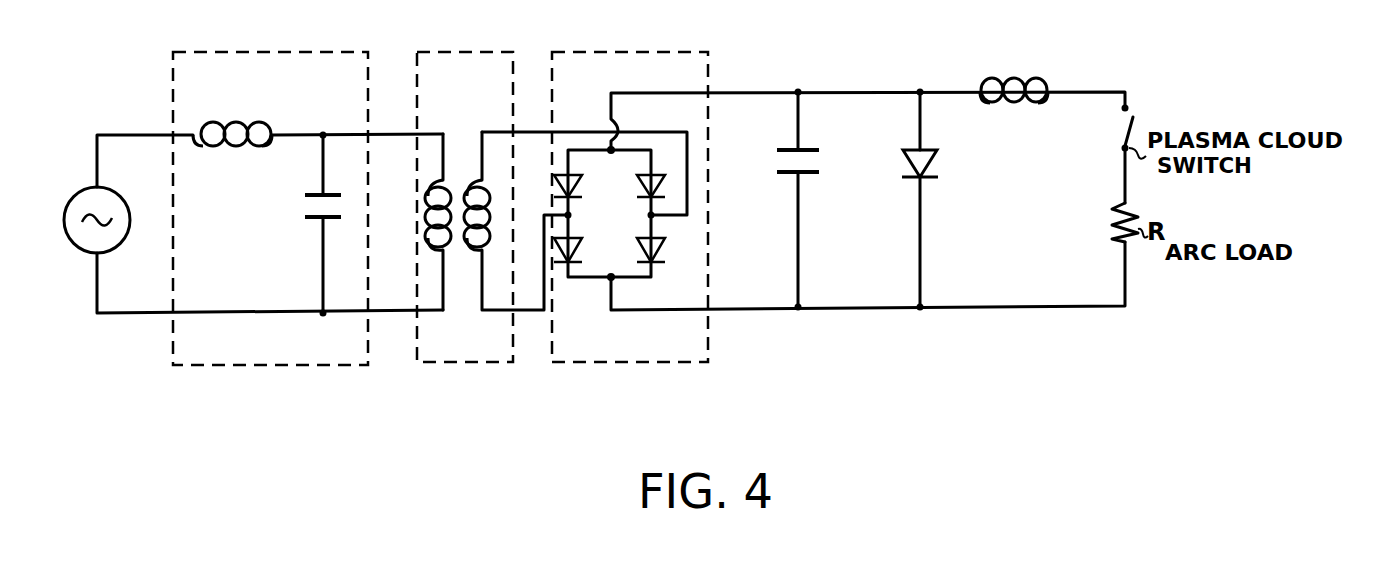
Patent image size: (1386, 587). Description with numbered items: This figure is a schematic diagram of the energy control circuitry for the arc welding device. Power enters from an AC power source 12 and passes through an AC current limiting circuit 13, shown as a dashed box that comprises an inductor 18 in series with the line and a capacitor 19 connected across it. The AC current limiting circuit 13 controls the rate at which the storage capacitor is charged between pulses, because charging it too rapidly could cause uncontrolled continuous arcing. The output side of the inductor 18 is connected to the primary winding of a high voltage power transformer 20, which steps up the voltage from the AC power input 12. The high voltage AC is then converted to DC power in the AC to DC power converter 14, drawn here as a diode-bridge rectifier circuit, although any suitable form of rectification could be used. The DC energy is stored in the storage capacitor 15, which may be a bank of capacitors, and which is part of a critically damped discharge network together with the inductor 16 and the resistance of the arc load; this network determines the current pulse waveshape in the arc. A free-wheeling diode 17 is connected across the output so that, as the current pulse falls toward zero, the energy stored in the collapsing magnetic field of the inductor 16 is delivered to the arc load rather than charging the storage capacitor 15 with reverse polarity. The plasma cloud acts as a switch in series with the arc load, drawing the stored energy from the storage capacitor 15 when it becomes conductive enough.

The AC power source 12 is at (114, 238).
The AC current limiting circuit 13 is at (272, 368).
The AC to DC power converter 14 is at (630, 367).
The storage capacitor 15 is at (803, 183).
The inductor 16 is at (1003, 76).
The free-wheeling diode 17 is at (931, 180).
The inductor 18 is at (218, 122).
The capacitor 19 is at (303, 206).
The high voltage power transformer 20 is at (441, 367).